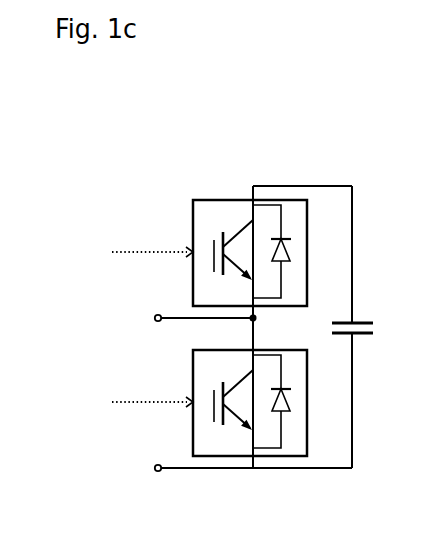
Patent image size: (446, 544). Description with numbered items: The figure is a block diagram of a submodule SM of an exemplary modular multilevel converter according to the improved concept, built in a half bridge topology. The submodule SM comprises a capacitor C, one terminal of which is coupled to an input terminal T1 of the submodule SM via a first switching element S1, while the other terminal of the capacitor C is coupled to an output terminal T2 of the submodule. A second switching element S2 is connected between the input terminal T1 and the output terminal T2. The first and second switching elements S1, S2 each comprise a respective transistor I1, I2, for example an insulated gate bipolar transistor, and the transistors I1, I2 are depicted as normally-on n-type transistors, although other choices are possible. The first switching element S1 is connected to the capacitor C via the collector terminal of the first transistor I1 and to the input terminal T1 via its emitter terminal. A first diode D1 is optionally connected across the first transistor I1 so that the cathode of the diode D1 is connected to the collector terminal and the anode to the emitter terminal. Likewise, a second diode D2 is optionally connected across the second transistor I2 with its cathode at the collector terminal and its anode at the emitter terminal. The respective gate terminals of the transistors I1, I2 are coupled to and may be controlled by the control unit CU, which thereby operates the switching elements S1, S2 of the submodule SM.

The submodule SM is at (236, 319).
The first switching element S1 is at (226, 253).
The second switching element S2 is at (227, 403).
The first transistor I1 is at (232, 243).
The second transistor I2 is at (232, 393).
The first diode D1 is at (267, 251).
The second diode D2 is at (267, 401).
The capacitor C is at (359, 313).
The control unit CU is at (139, 323).
The input terminal T1 is at (143, 306).
The output terminal T2 is at (144, 480).